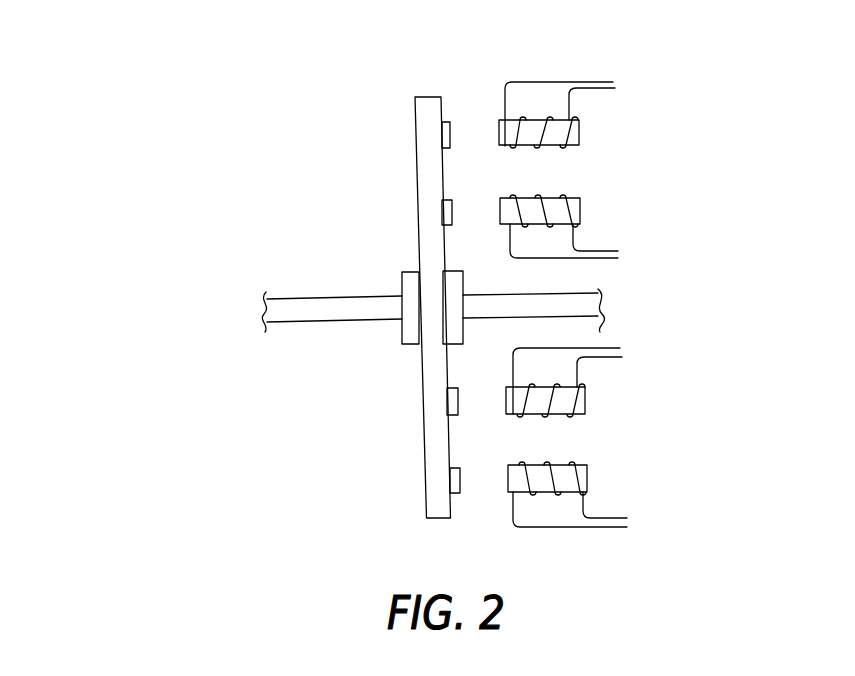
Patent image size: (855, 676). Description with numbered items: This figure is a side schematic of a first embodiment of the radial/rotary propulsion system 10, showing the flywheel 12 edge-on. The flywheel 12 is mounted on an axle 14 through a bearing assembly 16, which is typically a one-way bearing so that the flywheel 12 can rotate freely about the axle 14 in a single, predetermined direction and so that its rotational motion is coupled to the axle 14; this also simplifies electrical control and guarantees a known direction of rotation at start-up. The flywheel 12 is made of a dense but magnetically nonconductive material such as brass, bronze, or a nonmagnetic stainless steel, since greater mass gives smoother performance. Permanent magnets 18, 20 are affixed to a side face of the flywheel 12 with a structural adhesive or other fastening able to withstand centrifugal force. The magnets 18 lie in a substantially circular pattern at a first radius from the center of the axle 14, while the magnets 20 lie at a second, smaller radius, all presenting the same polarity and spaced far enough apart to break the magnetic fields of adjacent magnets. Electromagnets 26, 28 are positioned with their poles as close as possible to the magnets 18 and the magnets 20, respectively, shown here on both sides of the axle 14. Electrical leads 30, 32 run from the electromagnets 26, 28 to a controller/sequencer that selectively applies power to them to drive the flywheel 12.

The radial/rotary propulsion system 10 is at (218, 124).
The flywheel 12 is at (423, 123).
The axle 14 is at (295, 322).
The bearing assembly 16 is at (402, 335).
The permanent magnets 18 is at (448, 122).
The permanent magnets 20 is at (447, 217).
The electromagnets 26 is at (579, 131).
The electromagnets 28 is at (580, 208).
The electrical leads 30 is at (597, 82).
The electrical leads 32 is at (613, 252).